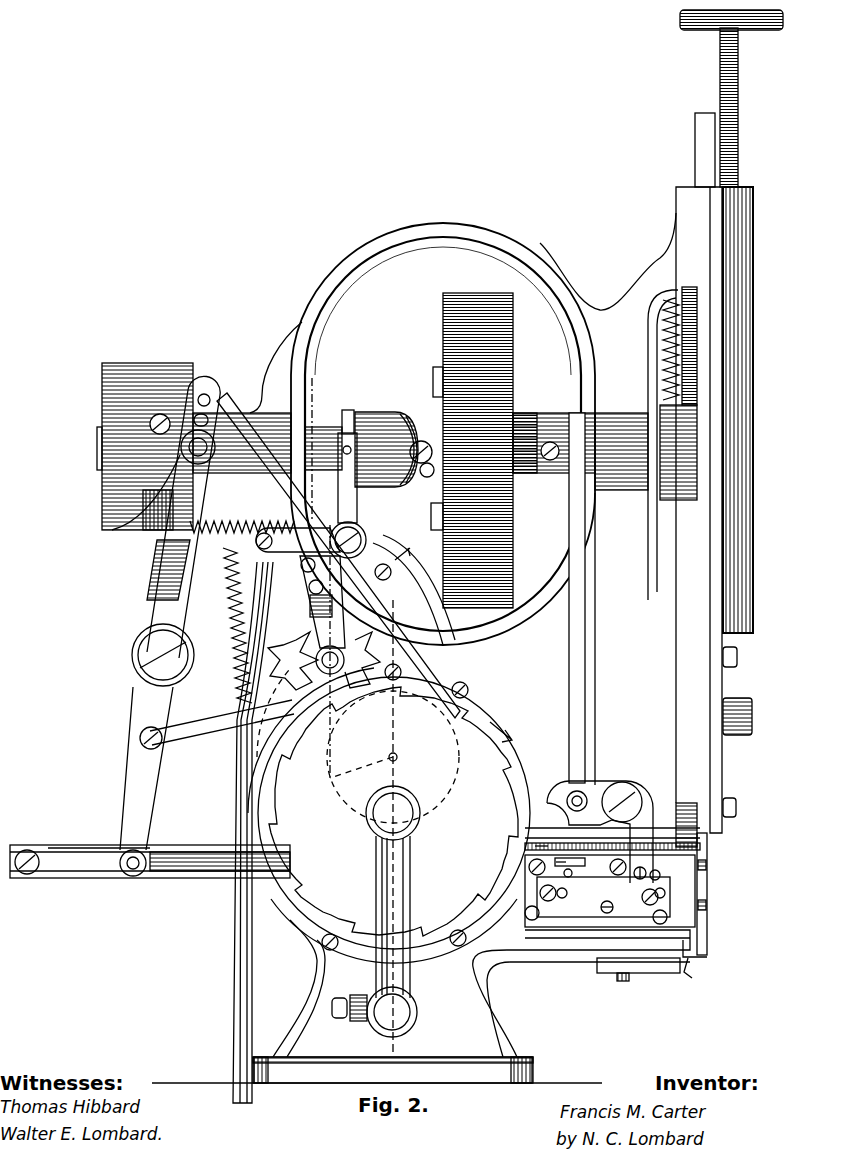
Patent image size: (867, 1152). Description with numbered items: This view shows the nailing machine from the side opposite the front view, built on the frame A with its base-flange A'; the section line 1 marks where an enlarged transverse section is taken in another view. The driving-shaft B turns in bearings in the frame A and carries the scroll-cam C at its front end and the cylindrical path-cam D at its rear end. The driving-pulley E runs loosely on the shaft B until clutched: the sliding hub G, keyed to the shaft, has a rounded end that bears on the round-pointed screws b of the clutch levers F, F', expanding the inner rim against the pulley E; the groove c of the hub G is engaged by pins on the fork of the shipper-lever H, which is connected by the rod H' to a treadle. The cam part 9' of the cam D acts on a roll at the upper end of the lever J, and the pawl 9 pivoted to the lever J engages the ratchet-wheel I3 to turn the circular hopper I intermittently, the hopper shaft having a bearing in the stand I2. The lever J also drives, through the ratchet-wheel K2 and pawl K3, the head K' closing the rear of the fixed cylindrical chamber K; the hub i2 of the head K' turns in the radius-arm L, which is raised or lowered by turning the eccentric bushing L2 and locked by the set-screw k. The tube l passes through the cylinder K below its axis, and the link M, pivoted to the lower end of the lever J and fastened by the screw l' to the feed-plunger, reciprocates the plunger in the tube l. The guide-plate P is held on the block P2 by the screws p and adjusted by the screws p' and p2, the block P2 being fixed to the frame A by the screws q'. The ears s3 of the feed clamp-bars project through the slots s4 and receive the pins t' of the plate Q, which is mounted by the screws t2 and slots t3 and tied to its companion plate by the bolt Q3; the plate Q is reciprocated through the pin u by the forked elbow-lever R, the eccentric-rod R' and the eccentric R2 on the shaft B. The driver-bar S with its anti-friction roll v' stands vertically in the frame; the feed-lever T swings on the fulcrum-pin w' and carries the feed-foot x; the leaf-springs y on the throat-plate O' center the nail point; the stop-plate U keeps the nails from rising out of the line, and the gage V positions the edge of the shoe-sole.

The frame A is at (452, 635).
The base-flange A' is at (393, 1070).
The section line 1 is at (354, 722).
The driving-shaft B is at (362, 451).
The cylindrical path-cam D is at (147, 446).
The pawl 9 is at (203, 602).
The cam part 9' is at (198, 412).
The lever J is at (170, 626).
The link M is at (150, 861).
The tube l is at (119, 837).
The screw l' is at (27, 847).
The shipper-lever H is at (311, 495).
The rod H' is at (242, 832).
The circumferential groove c is at (348, 412).
The hub G is at (386, 449).
The lever F is at (423, 431).
The round-pointed steel screw b is at (428, 448).
The eccentric pin F' is at (428, 477).
The driving-pulley E is at (478, 450).
The eccentric R2 is at (536, 443).
The eccentric-rod R' is at (575, 598).
The feed-lever T is at (663, 445).
The anti-friction roll v' is at (683, 336).
The scroll-cam C is at (684, 440).
The driver-bar S is at (731, 98).
The fulcrum-pin w' is at (747, 732).
The circular hopper I is at (316, 661).
The stand I2 is at (322, 602).
The ratchet-wheel I3 is at (324, 661).
The pawl K3 is at (338, 555).
The cylindrical chamber K is at (393, 737).
The head K' is at (382, 813).
The ratchet-wheel K2 is at (393, 811).
The hub i2 is at (393, 813).
The radius-arm L is at (378, 888).
The eccentric bushing L2 is at (420, 1013).
The set-screw k is at (349, 999).
The adjustable stop-plate U is at (612, 836).
The adjustable guide-plate P is at (610, 888).
The plate Q is at (603, 897).
The screw p is at (532, 863).
The adjusting screw p' is at (620, 875).
The block P2 is at (577, 903).
The adjusting screw p2 is at (532, 843).
The bolt Q3 is at (617, 907).
The screw q' is at (599, 914).
The pin t' is at (627, 876).
The screw t2 is at (656, 903).
The slot t3 is at (614, 889).
The pin u is at (640, 864).
The ear s3 is at (627, 854).
The slot s4 is at (562, 852).
The elbow-lever R is at (600, 832).
The throat-plate O' is at (712, 894).
The leaf-spring y is at (708, 940).
The feed-foot x is at (692, 975).
The adjustable gage V is at (638, 973).